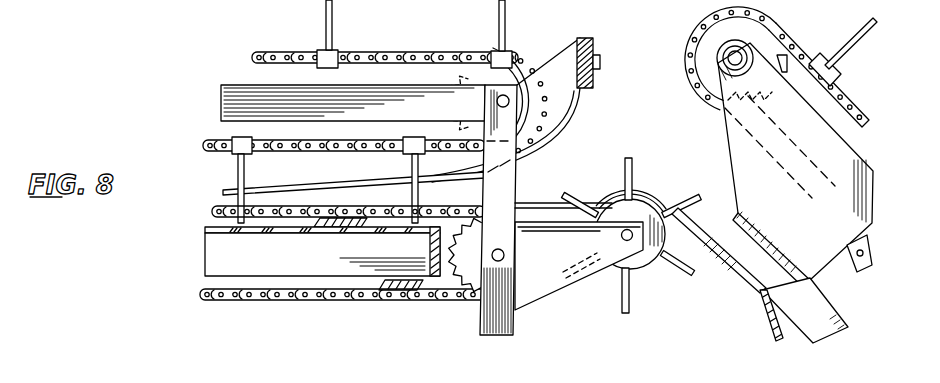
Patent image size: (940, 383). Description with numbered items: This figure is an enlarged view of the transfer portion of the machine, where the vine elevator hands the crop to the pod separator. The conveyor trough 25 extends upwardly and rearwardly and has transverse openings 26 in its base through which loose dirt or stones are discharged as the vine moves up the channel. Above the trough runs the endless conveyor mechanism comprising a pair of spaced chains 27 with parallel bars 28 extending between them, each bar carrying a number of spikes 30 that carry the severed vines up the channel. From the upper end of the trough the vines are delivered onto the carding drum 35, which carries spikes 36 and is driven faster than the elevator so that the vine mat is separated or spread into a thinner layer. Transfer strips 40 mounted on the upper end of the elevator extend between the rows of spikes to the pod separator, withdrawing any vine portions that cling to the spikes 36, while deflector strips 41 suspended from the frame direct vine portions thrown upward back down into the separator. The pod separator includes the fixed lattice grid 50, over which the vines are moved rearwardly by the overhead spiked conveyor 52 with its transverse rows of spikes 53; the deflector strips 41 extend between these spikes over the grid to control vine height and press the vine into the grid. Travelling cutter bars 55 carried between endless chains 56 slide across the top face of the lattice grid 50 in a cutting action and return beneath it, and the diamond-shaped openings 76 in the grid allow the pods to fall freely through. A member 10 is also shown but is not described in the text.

The slat bar 10 is at (220, 97).
The conveyor trough 25 is at (750, 281).
The transverse openings 26 is at (788, 330).
The spaced chains 27 is at (863, 116).
The parallel bars 28 is at (848, 78).
The spikes 30 is at (862, 38).
The carding drum 35 is at (651, 262).
The spikes 36 is at (625, 166).
The transfer strips 40 is at (655, 197).
The deflector strips 41 is at (560, 126).
The lattice grid 50 is at (222, 252).
The overhead spiked conveyor 52 is at (272, 52).
The spikes 53 is at (413, 172).
The travelling cutter bars 55 is at (325, 3).
The endless chains 56 is at (205, 292).
The openings 76 is at (292, 233).